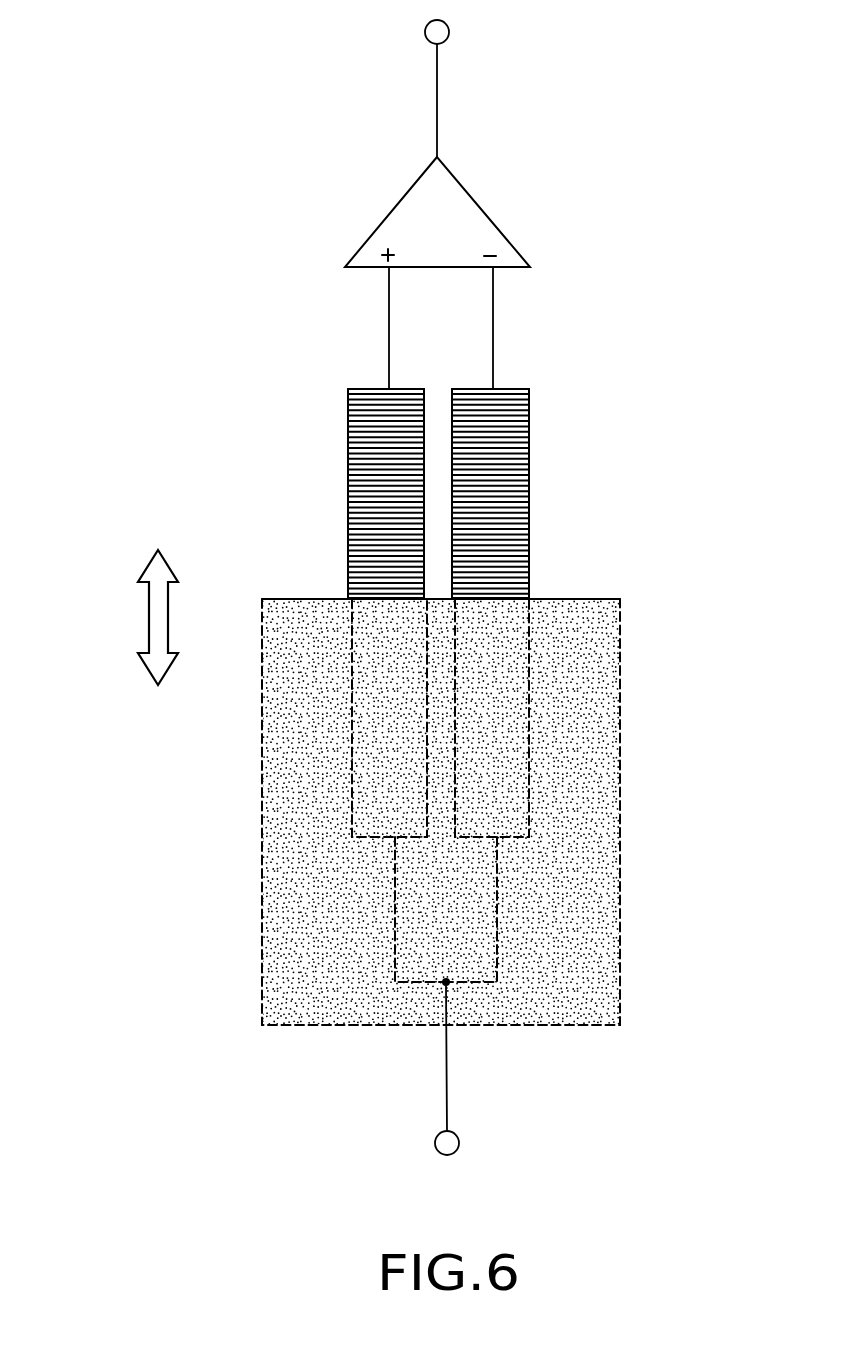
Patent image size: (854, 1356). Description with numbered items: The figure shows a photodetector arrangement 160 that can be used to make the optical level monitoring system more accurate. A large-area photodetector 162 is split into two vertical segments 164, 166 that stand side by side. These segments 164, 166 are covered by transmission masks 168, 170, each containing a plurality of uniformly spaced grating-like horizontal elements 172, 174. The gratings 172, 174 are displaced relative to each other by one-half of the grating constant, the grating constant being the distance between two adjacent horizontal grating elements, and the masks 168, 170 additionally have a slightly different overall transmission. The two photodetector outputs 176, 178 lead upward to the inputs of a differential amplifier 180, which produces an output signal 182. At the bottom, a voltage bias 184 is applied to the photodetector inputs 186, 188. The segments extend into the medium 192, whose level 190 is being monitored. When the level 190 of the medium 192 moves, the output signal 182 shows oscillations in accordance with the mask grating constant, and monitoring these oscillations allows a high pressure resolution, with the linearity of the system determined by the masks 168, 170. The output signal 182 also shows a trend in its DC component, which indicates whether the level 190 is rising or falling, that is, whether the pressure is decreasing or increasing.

The photodetector arrangement 160 is at (218, 324).
The large-area photodetector 162 is at (540, 378).
The first vertical segment 164 is at (374, 388).
The second vertical segment 166 is at (473, 388).
The first transmission mask 168 is at (348, 435).
The second transmission mask 170 is at (530, 425).
The first grating elements 172 is at (356, 492).
The second grating elements 174 is at (518, 488).
The first photodetector output 176 is at (388, 311).
The second photodetector output 178 is at (497, 305).
The differential amplifier 180 is at (460, 203).
The output signal 182 is at (449, 30).
The voltage bias 184 is at (459, 1141).
The first photodetector input 186 is at (396, 957).
The second photodetector input 188 is at (498, 955).
The level 190 is at (612, 598).
The medium 192 is at (600, 892).